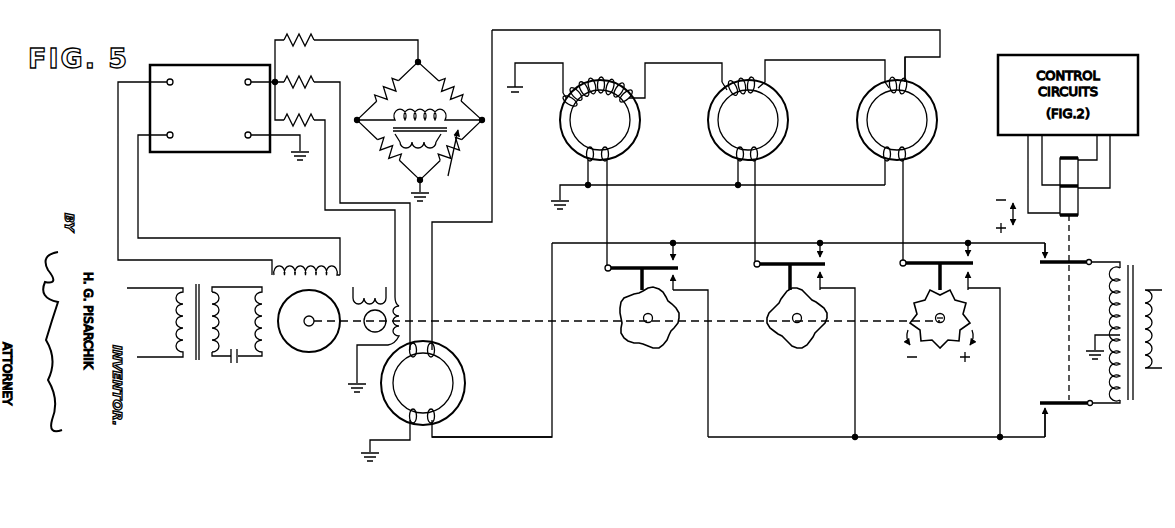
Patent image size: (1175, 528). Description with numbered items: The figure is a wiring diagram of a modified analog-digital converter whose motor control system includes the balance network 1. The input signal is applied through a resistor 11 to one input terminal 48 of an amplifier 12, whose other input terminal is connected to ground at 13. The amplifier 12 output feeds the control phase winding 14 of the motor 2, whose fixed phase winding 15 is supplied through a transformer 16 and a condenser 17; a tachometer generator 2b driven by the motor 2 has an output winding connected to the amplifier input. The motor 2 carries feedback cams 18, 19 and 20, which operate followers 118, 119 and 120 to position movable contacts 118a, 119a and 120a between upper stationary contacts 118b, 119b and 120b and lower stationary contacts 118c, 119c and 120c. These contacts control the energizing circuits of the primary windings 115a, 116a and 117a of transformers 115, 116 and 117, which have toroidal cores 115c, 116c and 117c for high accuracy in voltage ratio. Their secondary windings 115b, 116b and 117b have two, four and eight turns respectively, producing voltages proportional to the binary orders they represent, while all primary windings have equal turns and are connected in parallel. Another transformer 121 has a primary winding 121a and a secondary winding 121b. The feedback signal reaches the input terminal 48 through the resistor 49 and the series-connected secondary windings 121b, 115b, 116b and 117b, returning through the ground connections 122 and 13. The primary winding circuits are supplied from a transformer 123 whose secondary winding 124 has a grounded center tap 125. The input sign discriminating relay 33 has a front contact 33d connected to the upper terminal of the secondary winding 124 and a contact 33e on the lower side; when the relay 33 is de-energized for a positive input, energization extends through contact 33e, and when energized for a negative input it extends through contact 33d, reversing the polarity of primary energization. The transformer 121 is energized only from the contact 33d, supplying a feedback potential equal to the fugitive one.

The balance network 1 is at (301, 63).
The resistor 11 is at (303, 34).
The amplifier 12 is at (210, 112).
The ground 13 is at (295, 160).
The control phase winding 14 is at (334, 281).
The fixed phase winding 15 is at (253, 322).
The transformer 16 is at (200, 290).
The condenser 17 is at (238, 360).
The feedback cam 18 is at (925, 325).
The feedback cam 19 is at (783, 326).
The feedback cam 20 is at (640, 326).
The motor 2 is at (311, 352).
The tachometer generator 2b is at (371, 331).
The input sign discriminating relay 33 is at (1092, 208).
The front contact 33d is at (1063, 266).
The back contact 33e is at (1044, 402).
The input terminal 48 is at (248, 78).
The resistor 49 is at (300, 78).
The transformer 115 is at (897, 152).
The primary winding 115a is at (905, 171).
The secondary winding 115b is at (893, 80).
The toroidal core 115c is at (873, 91).
The transformer 116 is at (796, 153).
The primary winding 116a is at (757, 171).
The secondary winding 116b is at (740, 80).
The toroidal core 116c is at (787, 110).
The transformer 117 is at (641, 155).
The primary winding 117a is at (609, 172).
The secondary winding 117b is at (589, 80).
The toroidal core 117c is at (637, 124).
The follower 118 is at (965, 329).
The movable contact 118a is at (929, 262).
The upper stationary contact 118b is at (977, 263).
The lower stationary contact 118c is at (983, 286).
The follower 119 is at (818, 329).
The movable contact 119a is at (777, 262).
The upper stationary contact 119b is at (826, 251).
The lower stationary contact 119c is at (828, 289).
The follower 120 is at (665, 329).
The movable contact 120a is at (655, 265).
The upper stationary contact 120b is at (680, 246).
The lower stationary contact 120c is at (681, 289).
The transformer 121 is at (456, 399).
The primary winding 121a is at (425, 426).
The secondary winding 121b is at (425, 345).
The ground connection 122 is at (513, 96).
The transformer 123 is at (1152, 252).
The secondary winding 124 is at (1116, 314).
The center tap 125 is at (1090, 357).